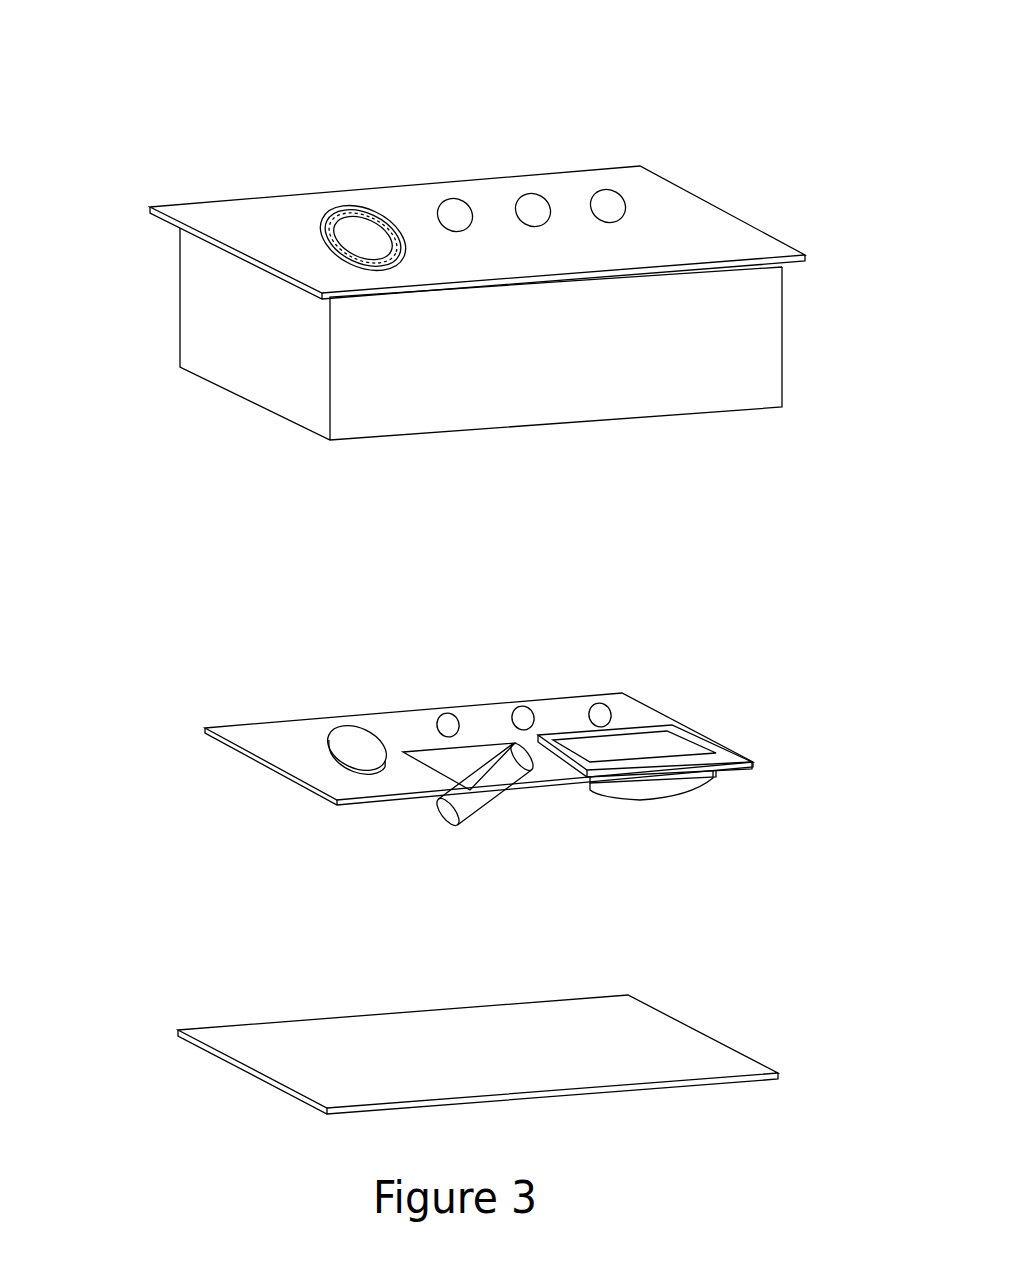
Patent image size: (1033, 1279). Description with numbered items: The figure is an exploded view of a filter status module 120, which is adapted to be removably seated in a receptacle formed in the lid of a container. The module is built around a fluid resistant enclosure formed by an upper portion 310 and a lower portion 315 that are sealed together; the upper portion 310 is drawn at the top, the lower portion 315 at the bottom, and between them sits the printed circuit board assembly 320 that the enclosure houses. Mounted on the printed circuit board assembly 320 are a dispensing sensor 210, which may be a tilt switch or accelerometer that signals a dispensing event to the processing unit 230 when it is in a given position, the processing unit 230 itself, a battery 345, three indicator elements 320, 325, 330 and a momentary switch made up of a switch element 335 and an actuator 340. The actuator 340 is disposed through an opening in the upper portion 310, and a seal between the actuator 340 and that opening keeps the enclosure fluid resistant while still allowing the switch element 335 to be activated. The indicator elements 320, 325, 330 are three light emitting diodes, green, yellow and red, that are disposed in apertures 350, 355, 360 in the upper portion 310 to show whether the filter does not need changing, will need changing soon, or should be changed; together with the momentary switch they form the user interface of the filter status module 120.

The filter status module 120 is at (817, 31).
The upper portion of the enclosure 310 is at (195, 373).
The lower portion of the enclosure 315 is at (207, 1027).
The printed circuit board assembly 320 is at (450, 722).
The indicator element 325 is at (525, 715).
The indicator element 330 is at (602, 712).
The switch element 335 is at (360, 745).
The actuator 340 is at (370, 245).
The battery 345 is at (668, 803).
The aperture 350 is at (457, 215).
The aperture 355 is at (535, 210).
The aperture 360 is at (610, 205).
The processing unit 230 is at (667, 745).
The dispensing sensor 210 is at (486, 812).